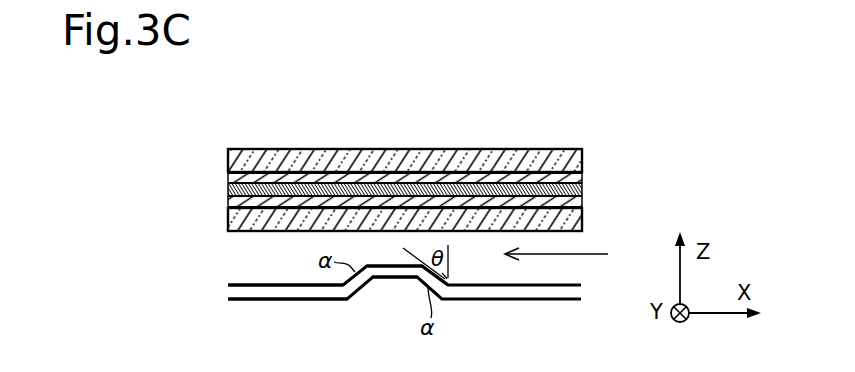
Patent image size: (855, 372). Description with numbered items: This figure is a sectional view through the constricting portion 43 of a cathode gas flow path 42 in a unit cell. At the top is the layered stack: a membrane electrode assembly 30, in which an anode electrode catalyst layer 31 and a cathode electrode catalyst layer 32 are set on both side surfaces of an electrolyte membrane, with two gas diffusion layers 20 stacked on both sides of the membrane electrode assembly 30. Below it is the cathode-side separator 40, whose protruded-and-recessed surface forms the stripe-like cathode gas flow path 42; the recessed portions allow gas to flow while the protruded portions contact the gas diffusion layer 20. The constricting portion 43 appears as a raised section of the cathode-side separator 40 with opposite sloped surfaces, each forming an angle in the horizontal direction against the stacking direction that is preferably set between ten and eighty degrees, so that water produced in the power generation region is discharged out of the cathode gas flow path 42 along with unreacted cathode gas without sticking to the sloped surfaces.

The gas diffusion layer 20 is at (228, 157).
The membrane electrode assembly 30 is at (419, 194).
The anode electrode catalyst layer 31 is at (578, 178).
The cathode electrode catalyst layer 32 is at (578, 202).
The cathode-side separator 40 is at (381, 301).
The cathode gas flow path 42 is at (271, 272).
The constricting portion 43 is at (388, 252).